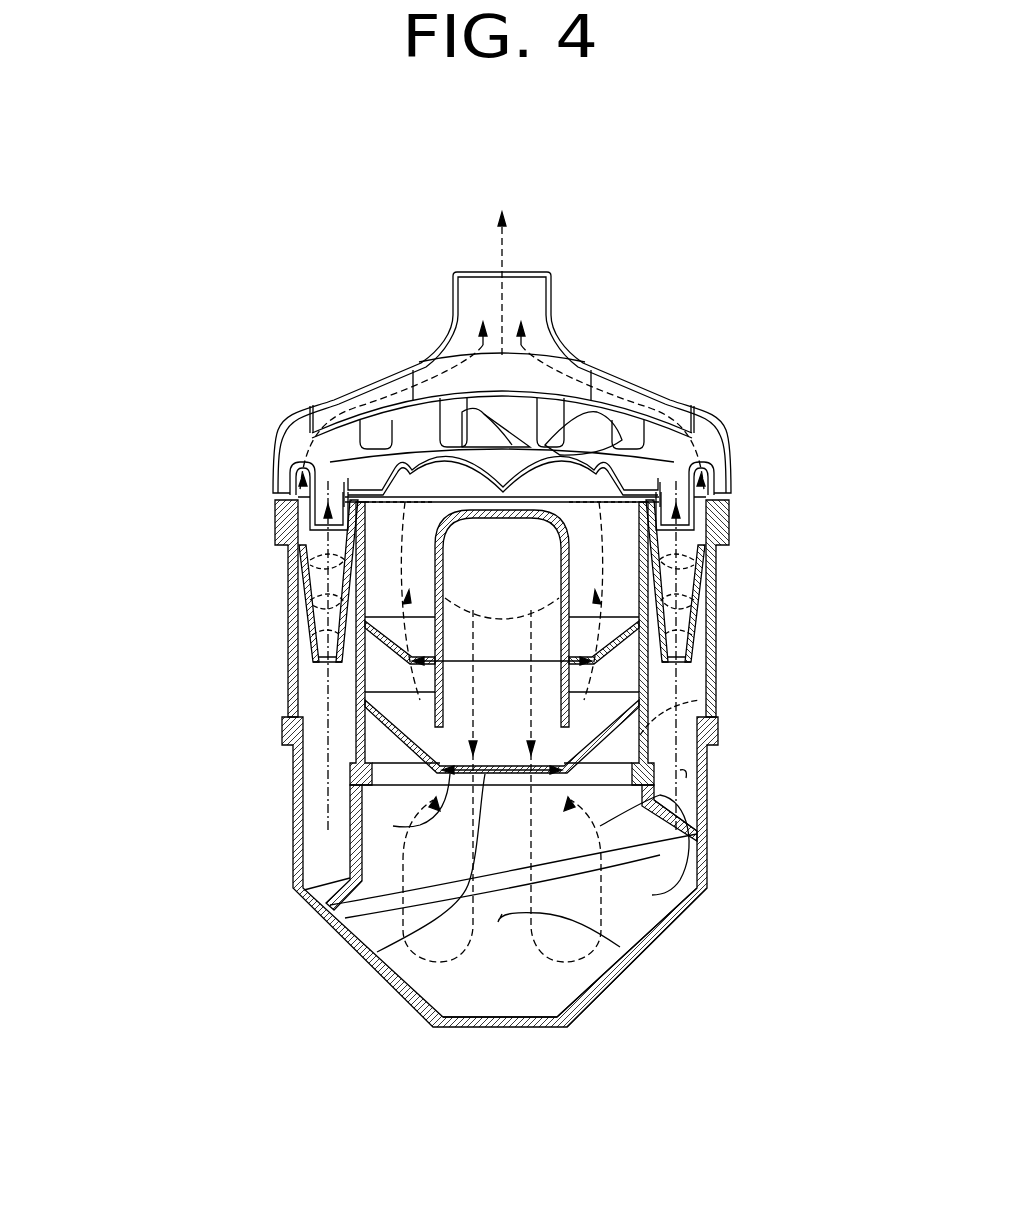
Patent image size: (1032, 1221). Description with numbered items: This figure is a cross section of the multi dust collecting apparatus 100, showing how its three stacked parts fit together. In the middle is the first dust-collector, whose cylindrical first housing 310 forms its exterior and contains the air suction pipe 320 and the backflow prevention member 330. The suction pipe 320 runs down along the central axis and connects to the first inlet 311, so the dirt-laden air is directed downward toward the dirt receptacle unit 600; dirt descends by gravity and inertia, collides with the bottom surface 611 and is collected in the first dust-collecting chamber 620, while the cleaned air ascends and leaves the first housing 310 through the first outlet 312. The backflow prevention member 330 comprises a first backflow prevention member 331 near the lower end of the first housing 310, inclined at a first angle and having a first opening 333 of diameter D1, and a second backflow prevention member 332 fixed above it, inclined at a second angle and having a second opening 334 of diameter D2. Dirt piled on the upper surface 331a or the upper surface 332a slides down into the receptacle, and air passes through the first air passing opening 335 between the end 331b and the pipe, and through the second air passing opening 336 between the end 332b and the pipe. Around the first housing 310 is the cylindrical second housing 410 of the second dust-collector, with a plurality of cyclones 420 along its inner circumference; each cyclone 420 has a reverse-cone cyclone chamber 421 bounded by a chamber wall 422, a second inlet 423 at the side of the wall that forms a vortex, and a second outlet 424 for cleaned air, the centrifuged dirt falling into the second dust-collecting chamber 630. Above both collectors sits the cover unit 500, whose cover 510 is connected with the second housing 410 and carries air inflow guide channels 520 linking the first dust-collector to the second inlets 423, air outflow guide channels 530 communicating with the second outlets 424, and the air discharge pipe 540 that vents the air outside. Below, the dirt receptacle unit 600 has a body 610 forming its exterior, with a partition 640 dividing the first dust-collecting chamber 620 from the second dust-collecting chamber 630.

The multi dust collecting apparatus 100 is at (767, 203).
The first housing 310 is at (357, 614).
The first inlet 311 is at (377, 952).
The first outlet 312 is at (368, 512).
The air suction pipe 320 is at (435, 598).
The backflow prevention member 330 is at (115, 785).
The first backflow prevention member 331 is at (188, 810).
The upper surface of first backflow prevention member 331a is at (350, 735).
The end of first backflow prevention member 331b is at (352, 800).
The second backflow prevention member 332 is at (186, 713).
The upper surface of second backflow prevention member 332a is at (352, 660).
The end of second backflow prevention member 332b is at (356, 690).
The first opening 333 is at (642, 743).
The second opening 334 is at (642, 712).
The first air passing opening 335 is at (303, 893).
The second air passing opening 336 is at (384, 645).
The second housing 410 is at (716, 664).
The cyclone 420 is at (812, 612).
The cyclone chamber 421 is at (682, 572).
The chamber wall 422 is at (702, 632).
The second inlet 423 is at (714, 477).
The second outlet 424 is at (694, 532).
The cover unit 500 is at (622, 343).
The cover 510 is at (642, 378).
The air inflow guide channels 520 is at (652, 420).
The air outflow guide channels 530 is at (718, 462).
The air discharge pipe 540 is at (552, 305).
The dirt receptacle unit 600 is at (735, 958).
The body 610 is at (708, 758).
The bottom surface 611 is at (517, 1023).
The first dust-collecting chamber 620 is at (610, 948).
The second dust-collecting chamber 630 is at (685, 777).
The partition 640 is at (708, 880).